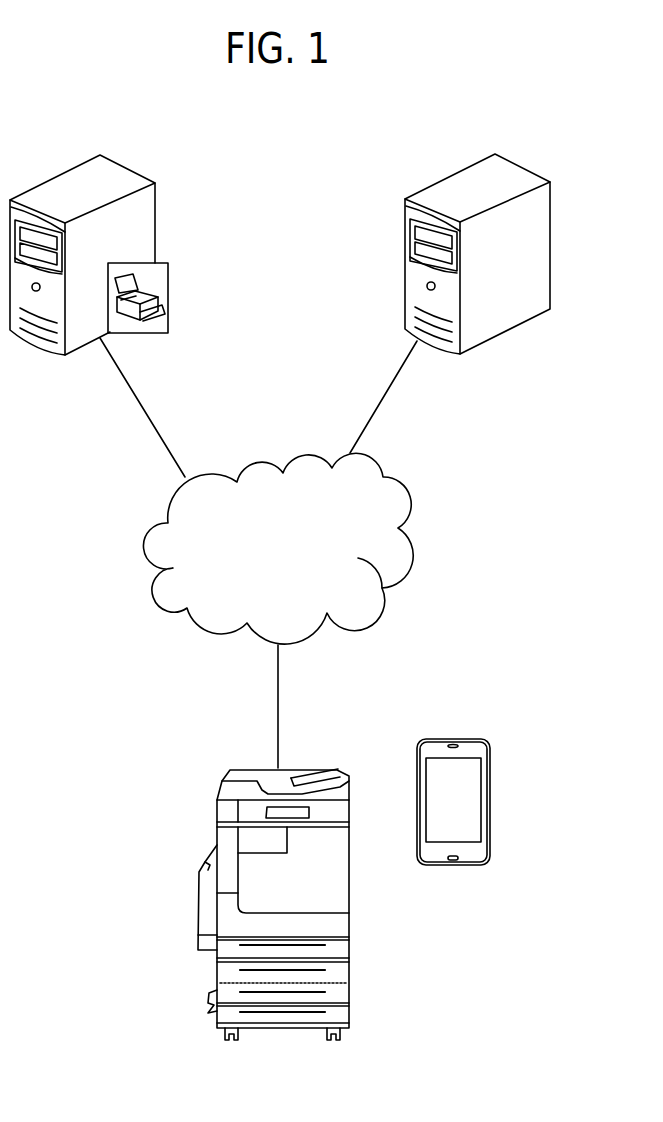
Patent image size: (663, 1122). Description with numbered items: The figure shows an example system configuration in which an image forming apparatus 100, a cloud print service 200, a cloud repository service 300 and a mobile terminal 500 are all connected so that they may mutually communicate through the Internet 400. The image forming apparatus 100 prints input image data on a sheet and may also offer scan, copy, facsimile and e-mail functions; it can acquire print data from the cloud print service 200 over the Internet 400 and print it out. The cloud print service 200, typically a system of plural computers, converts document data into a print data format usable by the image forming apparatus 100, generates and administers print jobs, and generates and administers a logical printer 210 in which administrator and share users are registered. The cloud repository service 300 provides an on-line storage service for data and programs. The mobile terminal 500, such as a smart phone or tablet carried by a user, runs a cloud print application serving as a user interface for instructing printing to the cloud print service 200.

The image forming apparatus 100 is at (215, 835).
The cloud print service 200 is at (73, 166).
The logical printer 210 is at (170, 303).
The cloud repository service 300 is at (468, 167).
The Internet 400 is at (143, 548).
The mobile terminal 500 is at (453, 737).